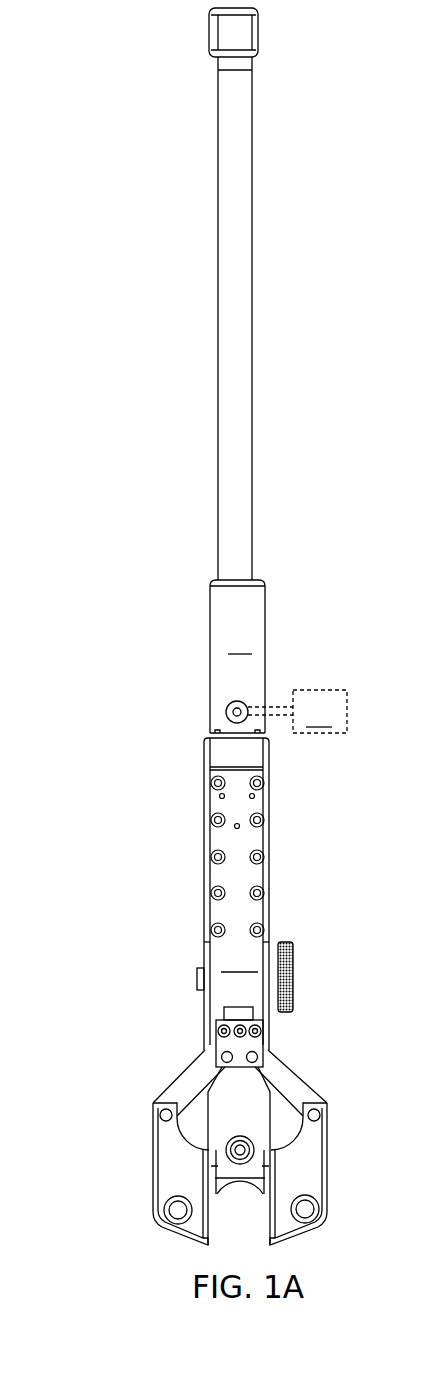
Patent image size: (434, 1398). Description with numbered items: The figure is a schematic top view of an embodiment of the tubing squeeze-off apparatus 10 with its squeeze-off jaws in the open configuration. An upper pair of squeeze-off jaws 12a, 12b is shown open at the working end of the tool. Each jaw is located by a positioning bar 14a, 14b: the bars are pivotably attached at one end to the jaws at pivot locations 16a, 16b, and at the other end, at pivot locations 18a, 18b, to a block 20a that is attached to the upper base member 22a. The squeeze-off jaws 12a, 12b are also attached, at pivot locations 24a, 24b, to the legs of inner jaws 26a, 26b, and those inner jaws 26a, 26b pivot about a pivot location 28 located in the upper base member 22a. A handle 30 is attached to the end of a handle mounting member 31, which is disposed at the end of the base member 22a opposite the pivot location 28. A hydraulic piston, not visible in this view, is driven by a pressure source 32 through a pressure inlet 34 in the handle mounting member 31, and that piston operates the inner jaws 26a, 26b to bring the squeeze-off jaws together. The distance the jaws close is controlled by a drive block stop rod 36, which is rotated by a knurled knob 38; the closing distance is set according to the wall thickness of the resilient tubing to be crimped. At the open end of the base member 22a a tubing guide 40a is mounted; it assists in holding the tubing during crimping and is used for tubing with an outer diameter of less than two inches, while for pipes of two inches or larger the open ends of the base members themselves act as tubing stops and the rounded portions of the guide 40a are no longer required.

The tool assembly 10 is at (283, 159).
The handle 30 is at (156, 318).
The handle mounting member 31 is at (237, 656).
The pressure source 32 is at (297, 711).
The pressure inlet 34 is at (237, 712).
The drive block stop rod 36 is at (124, 965).
The knurled knob 38 is at (336, 955).
The upper base member 22a is at (236, 894).
The block 20a is at (149, 1024).
The pivot location 18a is at (227, 1057).
The pivot location 18b is at (332, 1017).
The positioning bar 14a is at (190, 1093).
The positioning bar 14b is at (333, 1064).
The pivot location 16a is at (205, 1121).
The pivot location 16b is at (347, 1101).
The inner jaw 26a is at (128, 1145).
The inner jaw 26b is at (336, 1097).
The pivot location 28 is at (303, 1130).
The squeeze-off jaw 12a is at (127, 1174).
The squeeze-off jaw 12b is at (341, 1174).
The pivot location 24a is at (119, 1233).
The pivot location 24b is at (351, 1199).
The tubing guide 40a is at (315, 1230).